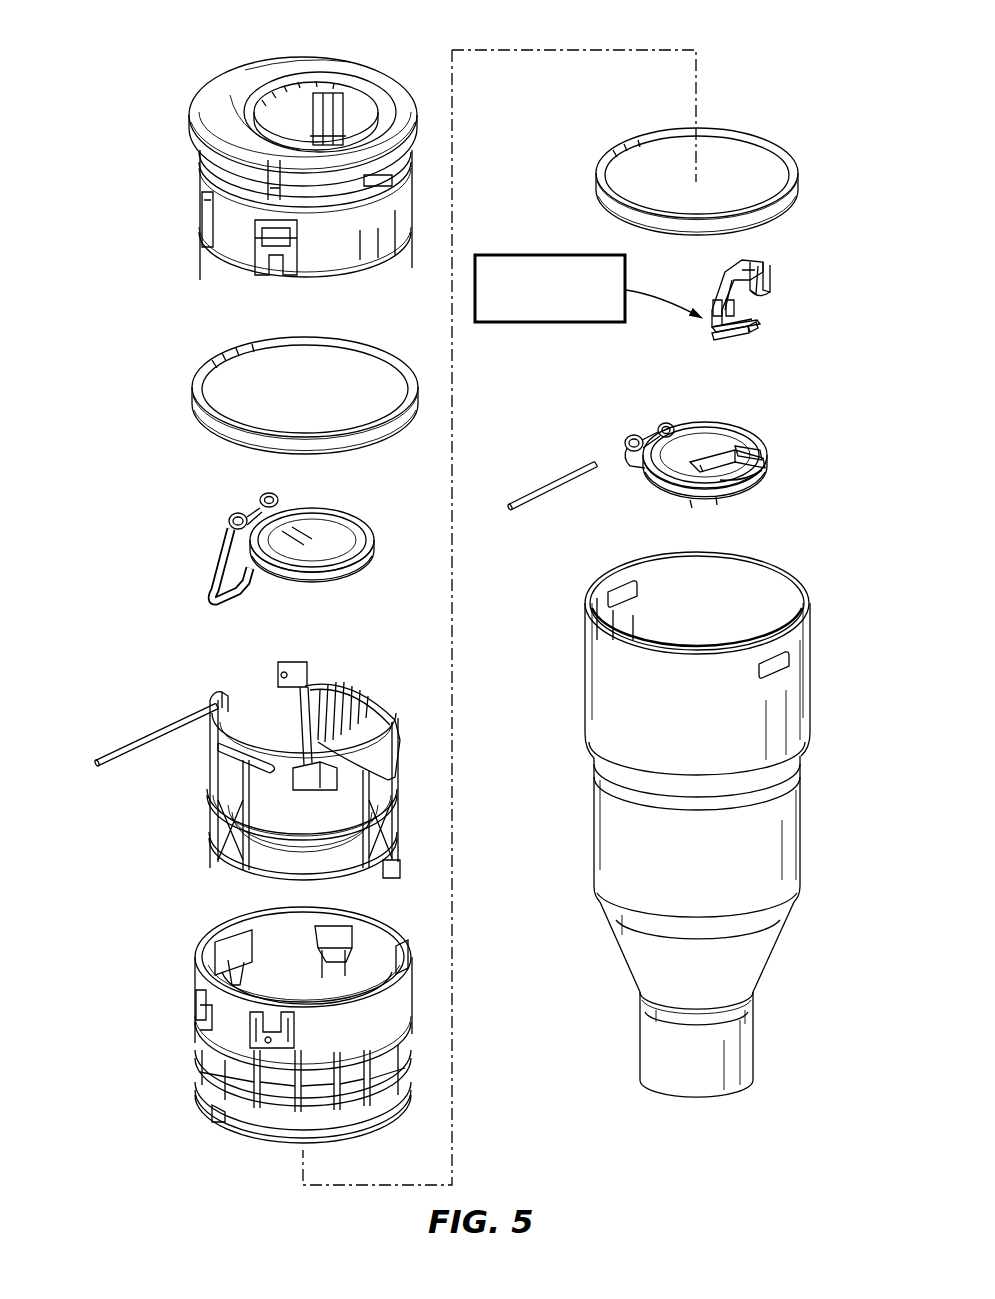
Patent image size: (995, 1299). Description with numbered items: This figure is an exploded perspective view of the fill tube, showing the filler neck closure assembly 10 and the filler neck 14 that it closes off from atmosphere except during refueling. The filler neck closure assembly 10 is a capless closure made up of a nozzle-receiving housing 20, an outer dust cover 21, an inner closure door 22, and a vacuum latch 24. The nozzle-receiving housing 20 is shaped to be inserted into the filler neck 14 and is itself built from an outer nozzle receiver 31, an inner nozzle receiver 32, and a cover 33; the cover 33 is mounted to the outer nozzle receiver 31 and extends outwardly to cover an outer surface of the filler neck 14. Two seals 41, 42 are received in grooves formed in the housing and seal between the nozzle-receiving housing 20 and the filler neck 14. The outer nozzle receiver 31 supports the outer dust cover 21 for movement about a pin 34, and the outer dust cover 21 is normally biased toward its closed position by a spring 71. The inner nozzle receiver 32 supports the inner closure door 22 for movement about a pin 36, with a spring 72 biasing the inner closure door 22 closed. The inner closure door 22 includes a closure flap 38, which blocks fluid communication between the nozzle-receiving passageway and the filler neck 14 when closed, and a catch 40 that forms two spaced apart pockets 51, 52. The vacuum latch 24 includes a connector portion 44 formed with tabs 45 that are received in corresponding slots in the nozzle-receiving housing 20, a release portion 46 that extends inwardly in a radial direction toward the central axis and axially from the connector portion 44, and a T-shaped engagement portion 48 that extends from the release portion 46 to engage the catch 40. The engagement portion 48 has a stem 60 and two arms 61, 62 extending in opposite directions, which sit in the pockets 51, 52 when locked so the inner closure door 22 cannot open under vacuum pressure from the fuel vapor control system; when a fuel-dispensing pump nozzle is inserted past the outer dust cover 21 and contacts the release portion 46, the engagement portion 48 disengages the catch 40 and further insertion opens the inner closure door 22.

The filler neck closure assembly 10 is at (152, 62).
The filler neck 14 is at (813, 808).
The nozzle-receiving housing 20 is at (166, 130).
The outer dust cover 21 is at (352, 503).
The inner closure door 22 is at (762, 428).
The vacuum latch 24 is at (532, 256).
The outer nozzle receiver 31 is at (180, 793).
The inner nozzle receiver 32 is at (153, 1015).
The cover 33 is at (155, 190).
The pin 34 is at (117, 733).
The pin 36 is at (531, 495).
The closure flap 38 is at (697, 447).
The catch 40 is at (775, 468).
The seal 41 is at (188, 343).
The seal 42 is at (635, 126).
The connector portion 44 is at (767, 262).
The tabs 45 is at (766, 300).
The release portion 46 is at (714, 283).
The engagement portion 48 is at (767, 352).
The pocket 51 is at (748, 492).
The pocket 52 is at (773, 470).
The stem 60 is at (712, 327).
The arm 61 is at (716, 350).
The arm 62 is at (748, 348).
The spring 71 is at (233, 517).
The spring 72 is at (630, 438).